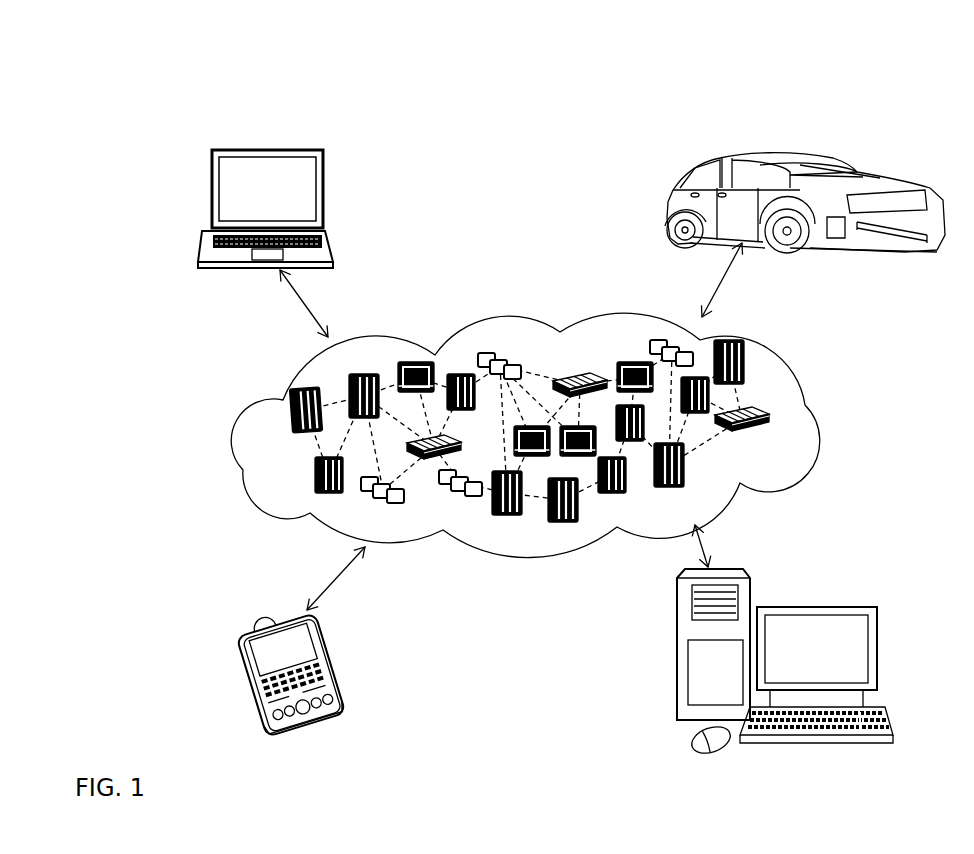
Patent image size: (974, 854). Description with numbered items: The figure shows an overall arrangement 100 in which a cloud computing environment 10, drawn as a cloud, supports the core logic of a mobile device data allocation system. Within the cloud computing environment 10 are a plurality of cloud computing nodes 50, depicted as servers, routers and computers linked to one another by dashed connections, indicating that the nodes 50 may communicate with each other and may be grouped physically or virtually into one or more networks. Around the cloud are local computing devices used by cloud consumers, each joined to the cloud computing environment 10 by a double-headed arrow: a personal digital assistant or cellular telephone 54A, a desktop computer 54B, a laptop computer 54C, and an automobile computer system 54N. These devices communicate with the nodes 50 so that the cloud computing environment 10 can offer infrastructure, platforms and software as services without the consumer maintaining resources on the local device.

The system 100 is at (491, 117).
The cloud computing environment 10 is at (813, 418).
The cloud computing node 50 is at (775, 439).
The personal digital assistant (PDA) or cellular telephone 54A is at (333, 668).
The desktop computer 54B is at (815, 606).
The laptop computer 54C is at (323, 197).
The automobile computer system 54N is at (671, 205).